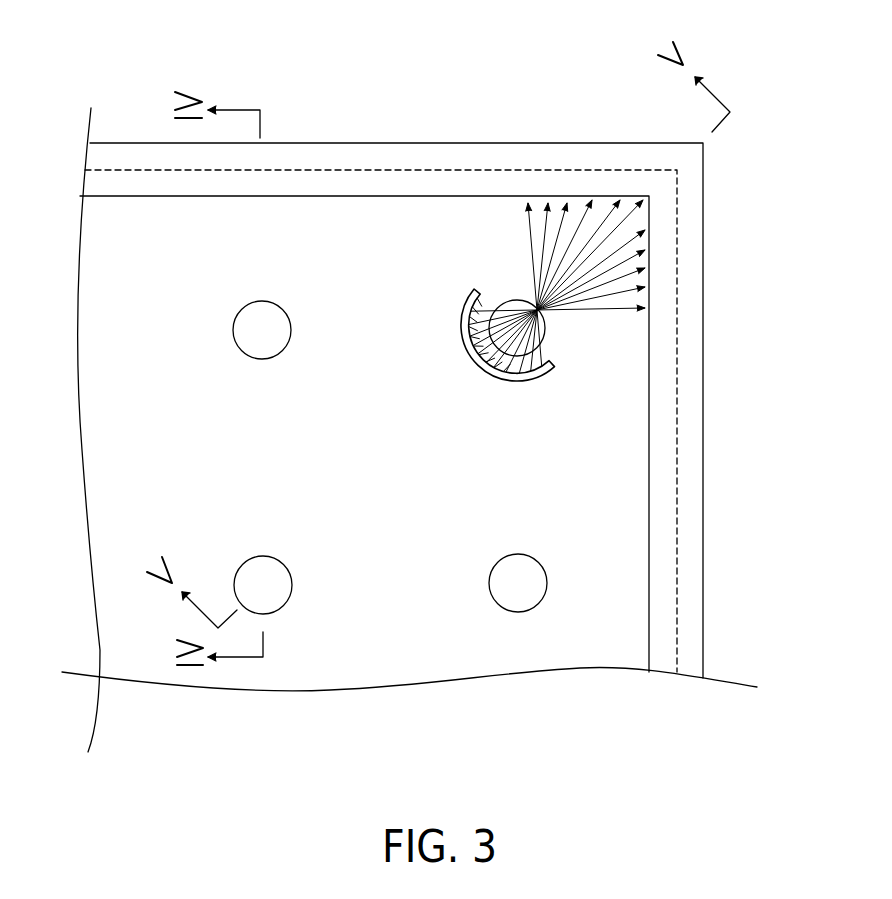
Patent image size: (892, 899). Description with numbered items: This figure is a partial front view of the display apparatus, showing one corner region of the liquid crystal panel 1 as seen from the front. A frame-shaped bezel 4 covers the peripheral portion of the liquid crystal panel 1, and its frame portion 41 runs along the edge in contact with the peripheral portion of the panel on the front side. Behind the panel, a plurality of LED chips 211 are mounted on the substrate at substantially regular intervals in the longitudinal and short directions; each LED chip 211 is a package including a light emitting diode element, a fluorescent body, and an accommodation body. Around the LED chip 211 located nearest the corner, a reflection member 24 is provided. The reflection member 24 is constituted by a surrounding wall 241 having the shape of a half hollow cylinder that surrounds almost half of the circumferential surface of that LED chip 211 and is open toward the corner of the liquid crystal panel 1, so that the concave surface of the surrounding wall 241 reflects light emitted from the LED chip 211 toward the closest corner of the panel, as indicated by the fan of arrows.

The liquid crystal panel 1 is at (683, 518).
The bezel 4 is at (332, 122).
The frame portion 41 is at (450, 152).
The LED chip 211 is at (240, 308).
The reflection member 24 is at (517, 332).
The surrounding wall 241 is at (462, 307).